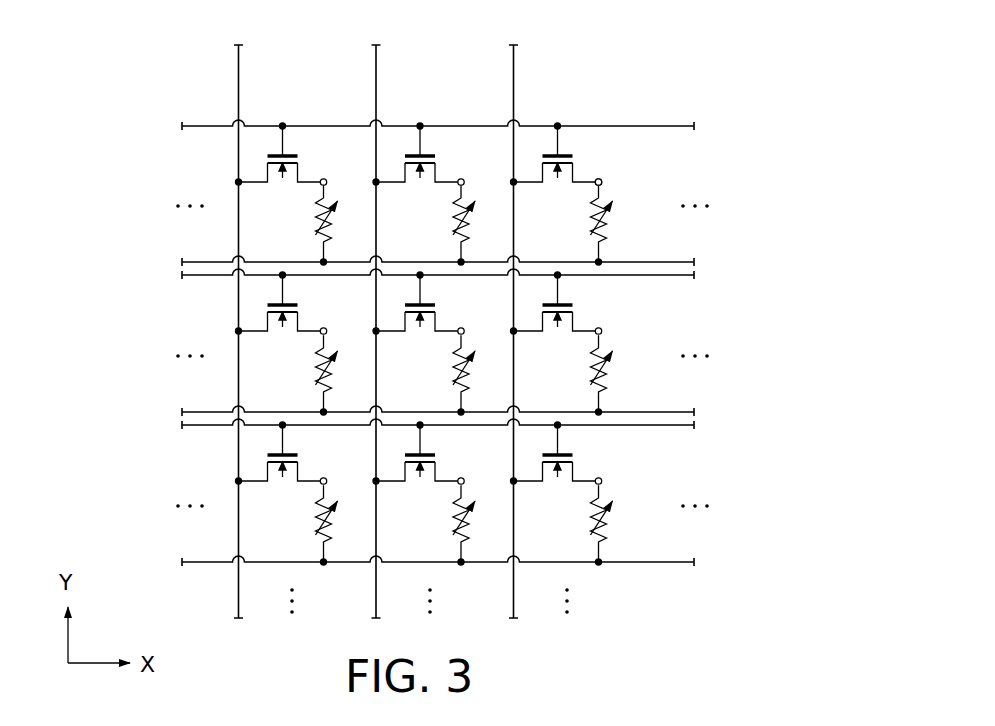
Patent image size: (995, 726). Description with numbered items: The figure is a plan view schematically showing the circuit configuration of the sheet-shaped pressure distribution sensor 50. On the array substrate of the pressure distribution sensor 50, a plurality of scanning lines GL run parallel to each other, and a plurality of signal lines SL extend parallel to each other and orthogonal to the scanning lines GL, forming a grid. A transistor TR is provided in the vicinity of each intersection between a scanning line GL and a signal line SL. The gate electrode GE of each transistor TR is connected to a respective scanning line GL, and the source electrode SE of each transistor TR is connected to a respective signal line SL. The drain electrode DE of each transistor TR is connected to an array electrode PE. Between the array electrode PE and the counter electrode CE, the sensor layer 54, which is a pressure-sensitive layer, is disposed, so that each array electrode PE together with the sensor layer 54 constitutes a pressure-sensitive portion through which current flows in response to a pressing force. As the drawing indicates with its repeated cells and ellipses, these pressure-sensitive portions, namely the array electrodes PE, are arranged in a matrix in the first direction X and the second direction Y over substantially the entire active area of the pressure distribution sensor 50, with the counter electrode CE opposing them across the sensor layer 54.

The pressure distribution sensor 50 is at (671, 72).
The signal line SL is at (241, 62).
The scanning line GL is at (195, 124).
The counter electrode CE is at (677, 262).
The transistor TR is at (400, 281).
The gate electrode GE is at (273, 121).
The source electrode SE is at (230, 167).
The drain electrode DE is at (326, 155).
The array electrode PE is at (327, 180).
The sensor layer 54 is at (311, 224).